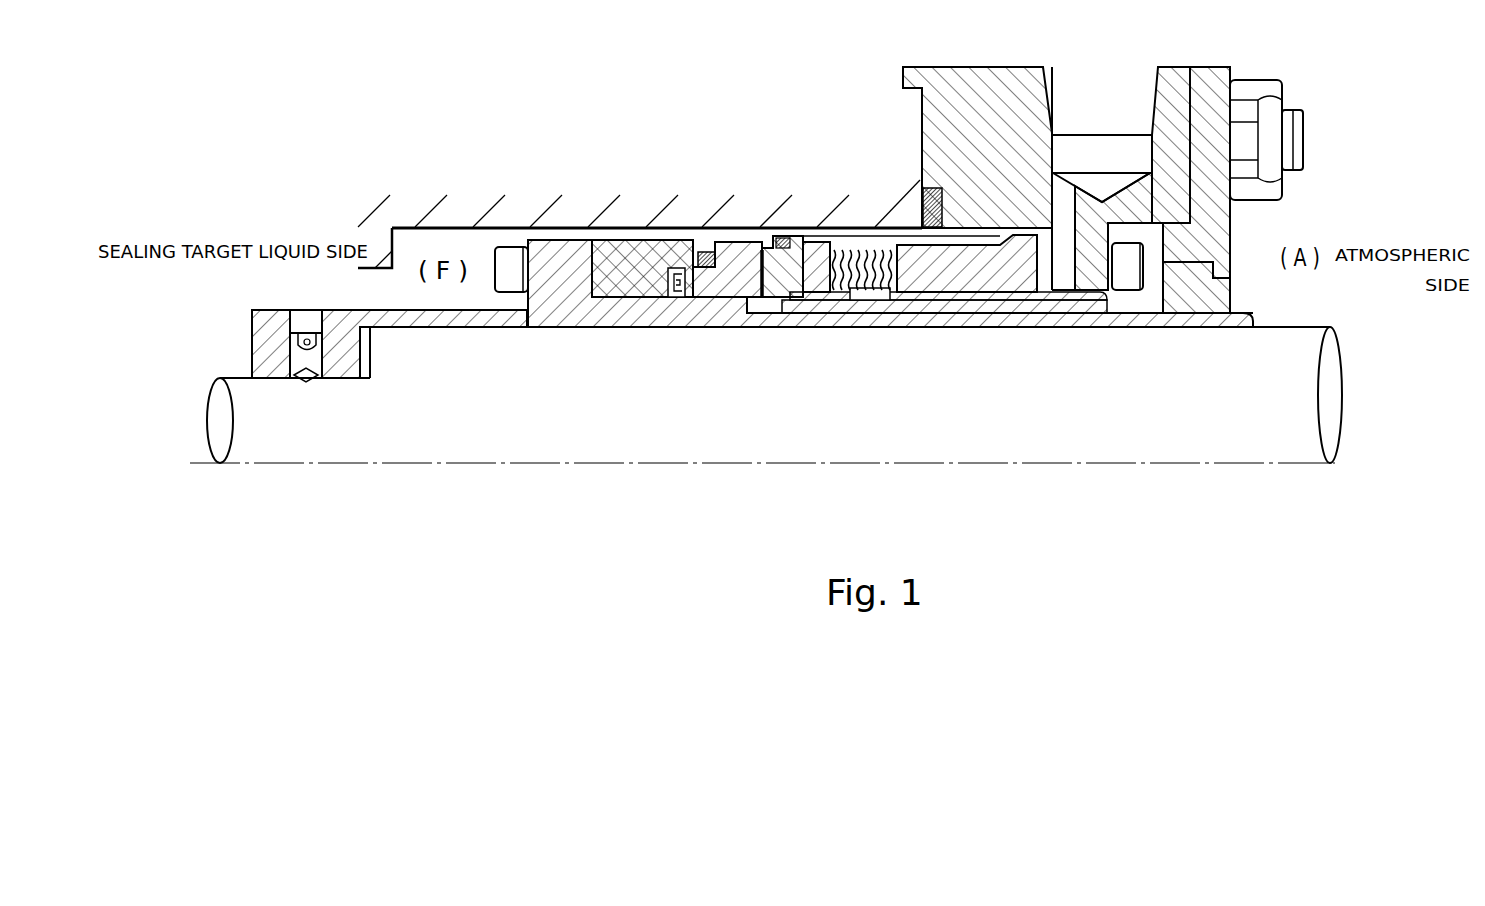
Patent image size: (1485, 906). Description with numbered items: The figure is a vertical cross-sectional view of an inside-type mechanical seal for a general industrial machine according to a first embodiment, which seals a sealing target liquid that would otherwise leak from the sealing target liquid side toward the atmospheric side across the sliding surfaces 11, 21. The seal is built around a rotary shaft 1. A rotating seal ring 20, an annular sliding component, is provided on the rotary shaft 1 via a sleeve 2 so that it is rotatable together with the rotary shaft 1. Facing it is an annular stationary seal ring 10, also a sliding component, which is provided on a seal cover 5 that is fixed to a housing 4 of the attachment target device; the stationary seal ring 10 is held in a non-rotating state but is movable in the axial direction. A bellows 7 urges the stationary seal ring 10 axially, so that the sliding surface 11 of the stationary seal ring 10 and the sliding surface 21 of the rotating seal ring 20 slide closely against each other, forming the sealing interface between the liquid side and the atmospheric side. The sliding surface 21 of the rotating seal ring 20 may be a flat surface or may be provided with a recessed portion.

The rotary shaft 1 is at (233, 378).
The sleeve 2 is at (633, 317).
The housing 4 is at (655, 202).
The seal cover 5 is at (985, 78).
The bellows 7 is at (858, 250).
The stationary seal ring 10 is at (788, 238).
The sliding surface 11 is at (750, 285).
The rotating seal ring 20 is at (746, 236).
The sliding surface 21 is at (772, 282).